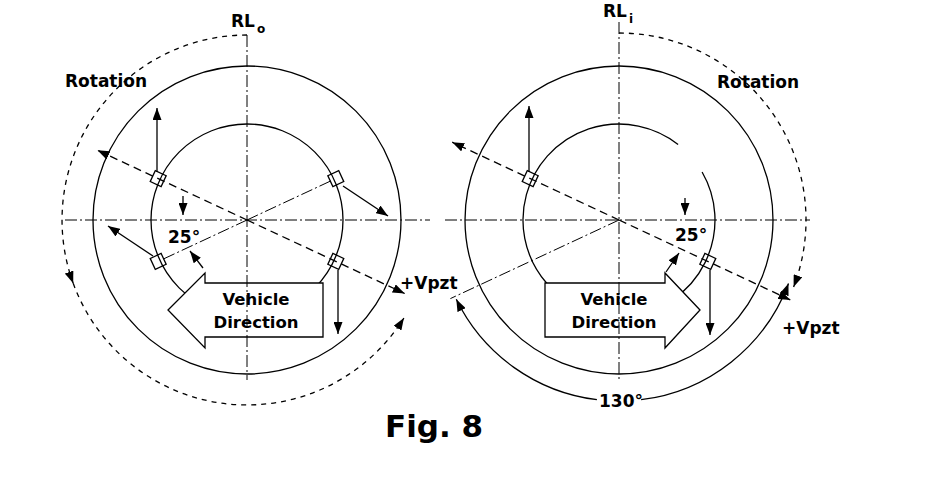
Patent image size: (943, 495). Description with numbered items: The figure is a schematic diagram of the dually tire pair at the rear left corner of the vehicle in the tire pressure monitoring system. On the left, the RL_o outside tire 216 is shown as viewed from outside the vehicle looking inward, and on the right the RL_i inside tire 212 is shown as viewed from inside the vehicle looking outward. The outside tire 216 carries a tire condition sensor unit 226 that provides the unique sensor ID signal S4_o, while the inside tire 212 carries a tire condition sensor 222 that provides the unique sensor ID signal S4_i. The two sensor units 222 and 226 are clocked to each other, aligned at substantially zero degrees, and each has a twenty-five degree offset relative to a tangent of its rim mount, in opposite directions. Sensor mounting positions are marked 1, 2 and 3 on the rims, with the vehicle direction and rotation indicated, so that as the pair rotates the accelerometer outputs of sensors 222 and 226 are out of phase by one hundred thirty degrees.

The rear left outside tire 216 is at (325, 86).
The rear left inside tire 212 is at (561, 79).
The tire condition sensor unit 226 is at (152, 266).
The tire condition sensor 222 is at (714, 256).
The sensor position 1 is at (535, 243).
The sensor position 2 is at (109, 317).
The sensor position 3 is at (332, 154).